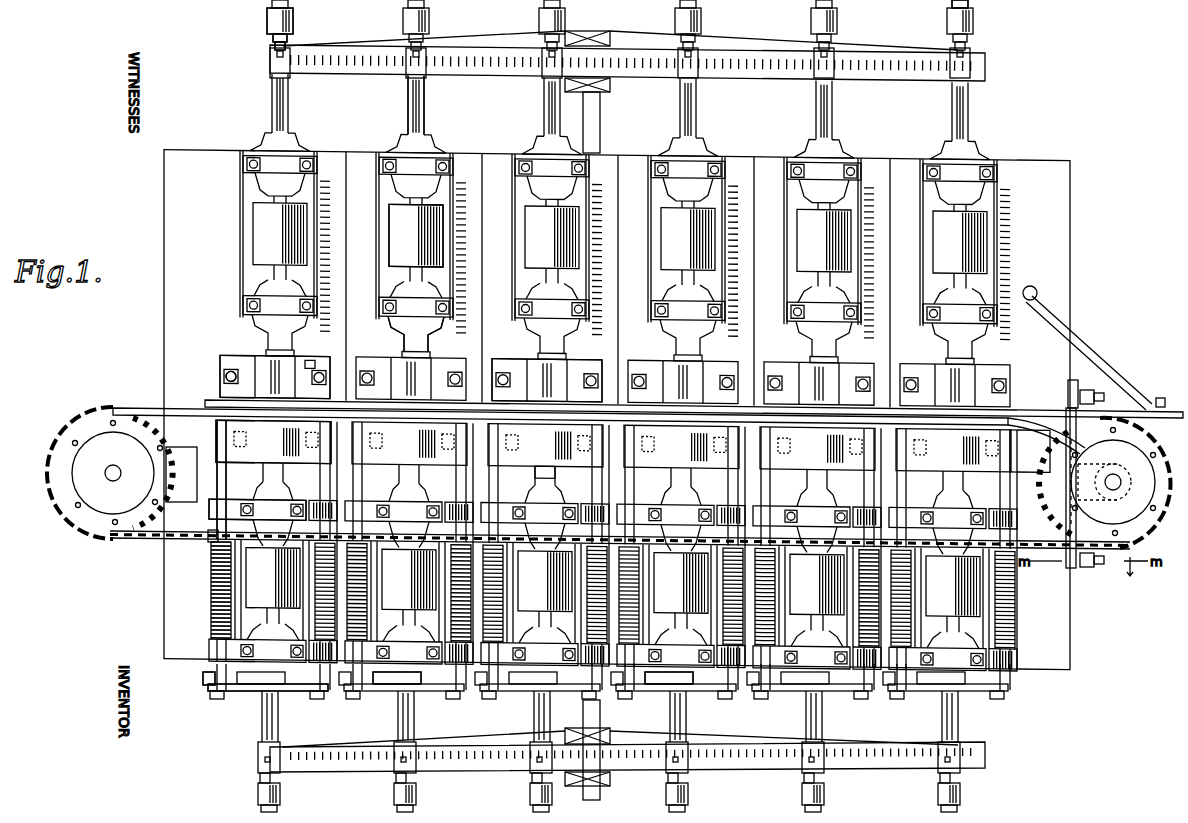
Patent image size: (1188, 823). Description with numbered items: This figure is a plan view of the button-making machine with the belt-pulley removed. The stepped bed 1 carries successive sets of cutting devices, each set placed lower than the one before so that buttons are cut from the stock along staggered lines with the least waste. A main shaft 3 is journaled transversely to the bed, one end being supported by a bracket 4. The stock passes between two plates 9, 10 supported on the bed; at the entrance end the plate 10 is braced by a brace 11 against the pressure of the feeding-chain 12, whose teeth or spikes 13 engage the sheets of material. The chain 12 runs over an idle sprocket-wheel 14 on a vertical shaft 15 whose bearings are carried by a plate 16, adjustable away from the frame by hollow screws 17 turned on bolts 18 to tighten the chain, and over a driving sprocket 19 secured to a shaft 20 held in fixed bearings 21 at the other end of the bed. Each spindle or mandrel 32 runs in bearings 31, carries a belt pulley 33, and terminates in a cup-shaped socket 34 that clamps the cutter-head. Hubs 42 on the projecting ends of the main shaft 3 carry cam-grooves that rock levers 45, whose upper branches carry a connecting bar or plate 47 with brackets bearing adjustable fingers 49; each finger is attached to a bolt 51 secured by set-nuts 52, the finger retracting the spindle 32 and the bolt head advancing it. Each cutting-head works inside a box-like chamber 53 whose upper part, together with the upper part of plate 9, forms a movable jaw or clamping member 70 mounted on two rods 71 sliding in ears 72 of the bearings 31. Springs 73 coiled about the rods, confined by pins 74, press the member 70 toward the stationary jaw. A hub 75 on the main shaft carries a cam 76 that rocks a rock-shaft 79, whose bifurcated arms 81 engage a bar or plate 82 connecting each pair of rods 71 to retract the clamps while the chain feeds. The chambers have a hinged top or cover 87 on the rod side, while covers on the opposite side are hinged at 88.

The bed 1 is at (617, 410).
The main shaft 3 is at (603, 128).
The bracket 4 is at (966, 6).
The plate 9 is at (222, 408).
The plate 10 is at (332, 400).
The brace 11 is at (1086, 362).
The feeding-chain 12 is at (142, 539).
The teeth or spikes 13 is at (76, 434).
The sprocket-wheel 14 is at (1104, 483).
The vertical shaft 15 is at (1122, 482).
The plate 16 is at (1072, 570).
The hollow screws 17 is at (1096, 392).
The bolts 18 is at (1096, 397).
The sprocket 19 is at (113, 473).
The shaft 20 is at (121, 475).
The fixed bearings 21 is at (181, 484).
The bearings 31 is at (400, 322).
The spindle or mandrel 32 is at (422, 130).
The pulley 33 is at (675, 397).
The cup-shaped socket 34 is at (546, 358).
The hubs 42 is at (614, 36).
The lever 45 is at (510, 38).
The connecting bar or plate 47 is at (352, 55).
The adjustable finger 49 is at (286, 39).
The bolt 51 is at (273, 45).
The set-nuts 52 is at (266, 21).
The box-like chamber 53 is at (310, 364).
The movable jaw or clamping member 70 is at (522, 441).
The rods 71 is at (227, 490).
The ears 72 is at (561, 579).
The springs 73 is at (211, 608).
The pins 74 is at (208, 538).
The hub 75 is at (662, 696).
The cam 76 is at (545, 459).
The rock-shaft 79 is at (346, 698).
The arms 81 is at (206, 688).
The bar or plate 82 is at (244, 695).
The hinged top or cover 87 is at (604, 428).
The hinge 88 is at (590, 350).